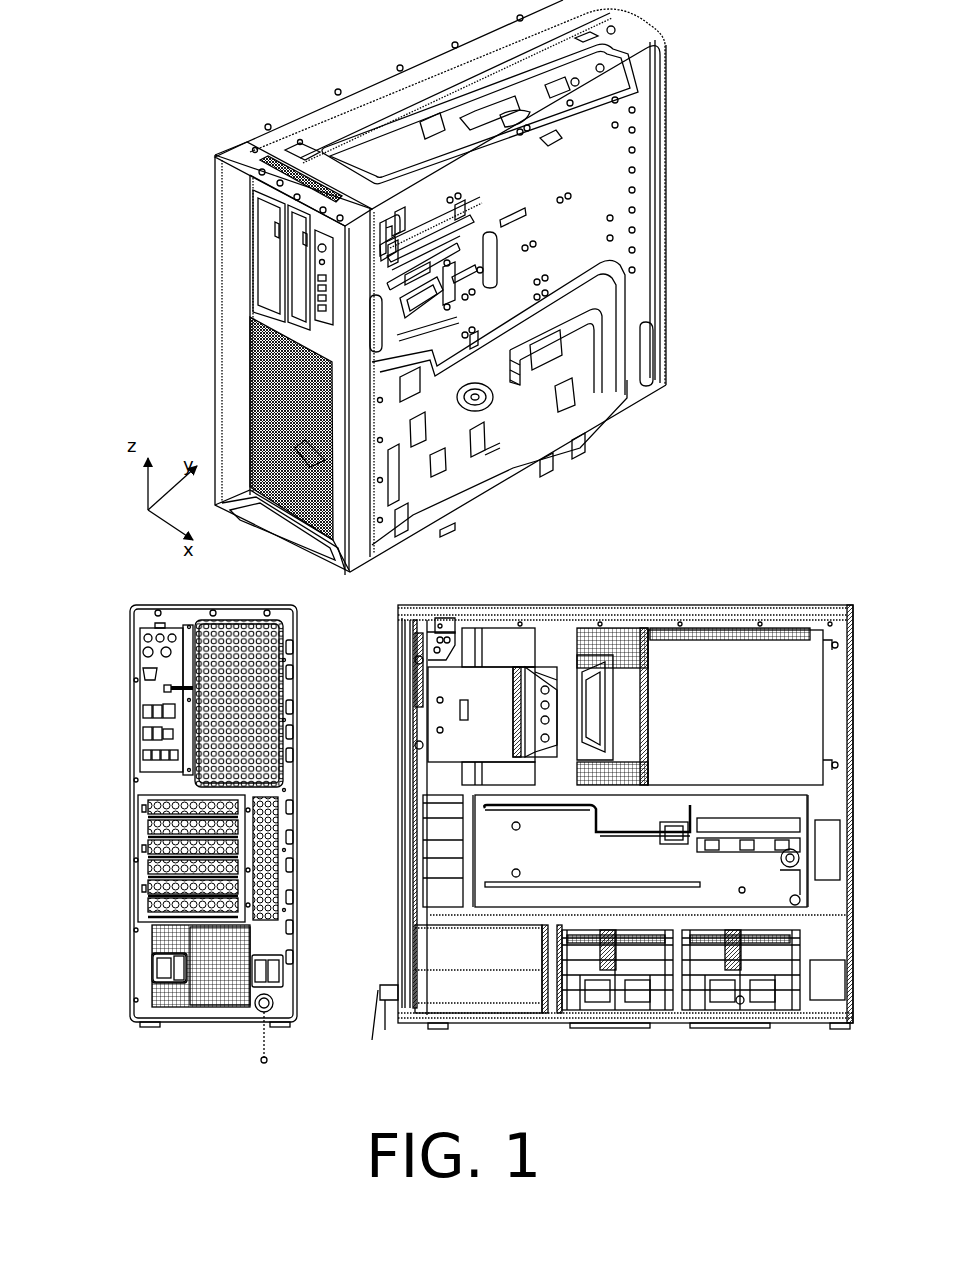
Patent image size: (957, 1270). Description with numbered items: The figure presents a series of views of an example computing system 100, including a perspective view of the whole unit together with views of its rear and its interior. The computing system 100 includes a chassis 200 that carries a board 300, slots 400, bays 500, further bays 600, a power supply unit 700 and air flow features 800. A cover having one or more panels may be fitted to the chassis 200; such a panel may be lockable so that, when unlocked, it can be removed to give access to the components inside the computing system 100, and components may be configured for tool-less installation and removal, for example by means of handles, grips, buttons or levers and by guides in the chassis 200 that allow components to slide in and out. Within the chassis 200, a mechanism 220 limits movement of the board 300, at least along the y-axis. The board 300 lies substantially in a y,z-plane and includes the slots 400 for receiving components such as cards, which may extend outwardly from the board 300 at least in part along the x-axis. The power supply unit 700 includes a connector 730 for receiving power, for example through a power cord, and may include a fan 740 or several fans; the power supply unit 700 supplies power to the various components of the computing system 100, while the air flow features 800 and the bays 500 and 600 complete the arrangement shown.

The computing system 100 is at (304, 44).
The chassis 200 is at (583, 452).
The mechanism 220 is at (468, 232).
The board 300 is at (648, 622).
The slots 400 is at (138, 878).
The bays 500 is at (714, 1012).
The bays 600 is at (240, 290).
The power supply unit 700 is at (480, 992).
The connector 730 is at (163, 977).
The fan 740 is at (205, 990).
The air flow features 800 is at (513, 637).